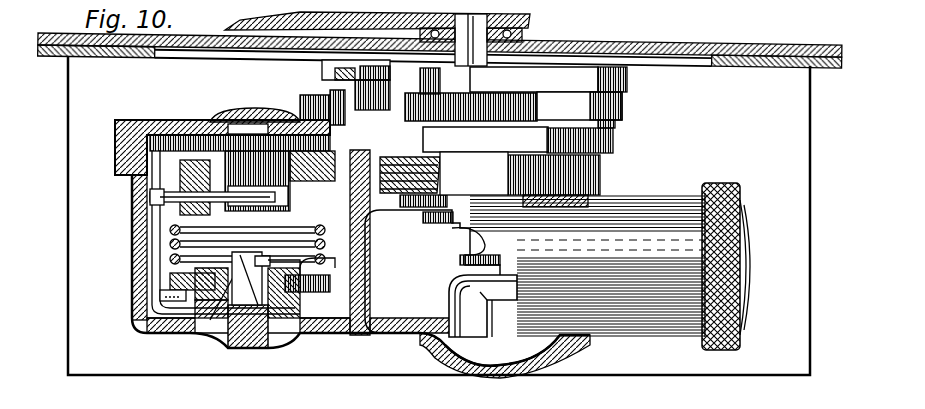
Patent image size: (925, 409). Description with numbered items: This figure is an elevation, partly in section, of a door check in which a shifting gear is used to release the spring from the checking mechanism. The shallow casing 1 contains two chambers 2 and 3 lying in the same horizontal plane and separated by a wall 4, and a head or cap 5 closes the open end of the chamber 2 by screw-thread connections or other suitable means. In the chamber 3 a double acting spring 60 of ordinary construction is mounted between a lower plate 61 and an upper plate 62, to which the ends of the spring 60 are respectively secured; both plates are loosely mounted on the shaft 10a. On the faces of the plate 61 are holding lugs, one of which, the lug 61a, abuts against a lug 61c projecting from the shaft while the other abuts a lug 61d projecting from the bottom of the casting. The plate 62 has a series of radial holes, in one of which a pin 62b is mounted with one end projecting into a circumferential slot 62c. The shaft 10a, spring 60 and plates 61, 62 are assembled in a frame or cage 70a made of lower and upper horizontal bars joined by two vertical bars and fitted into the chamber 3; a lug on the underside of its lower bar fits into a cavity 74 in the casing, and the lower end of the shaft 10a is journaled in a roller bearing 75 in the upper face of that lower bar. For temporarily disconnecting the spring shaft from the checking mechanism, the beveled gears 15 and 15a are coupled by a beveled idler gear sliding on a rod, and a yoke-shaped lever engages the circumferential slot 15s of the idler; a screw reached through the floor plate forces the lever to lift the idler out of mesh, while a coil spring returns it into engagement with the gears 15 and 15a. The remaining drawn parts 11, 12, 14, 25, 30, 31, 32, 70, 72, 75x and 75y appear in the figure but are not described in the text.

The casing 1 is at (362, 333).
The chamber 2 is at (408, 312).
The chamber 3 is at (172, 262).
The wall 4 is at (368, 240).
The head or cap 5 is at (740, 335).
The shaft 10a is at (212, 318).
The boss 11 is at (478, 338).
The shaft 12 is at (520, 337).
The top plate 14 is at (520, 18).
The gear 15 is at (428, 138).
The gear 15a is at (172, 133).
The circumferential slot 15s is at (378, 80).
The gear 25 is at (470, 98).
The pinion 30 is at (630, 80).
The collar 31 is at (615, 114).
The gear 32 is at (579, 106).
The double acting spring 60 is at (170, 245).
The plate 61 is at (312, 292).
The holding lug 61a is at (232, 335).
The lug 61c is at (262, 340).
The lug 61d is at (160, 302).
The plate 62 is at (190, 192).
The pin 62b is at (170, 198).
The circumferential slot 62c is at (246, 200).
The hook member 70 is at (460, 295).
The frame or cage 70a is at (158, 291).
The pin 72 is at (253, 320).
The cavity 74 is at (270, 330).
The roller bearing 75 is at (246, 336).
The rod head 75x is at (305, 95).
The rod collar 75y is at (345, 140).